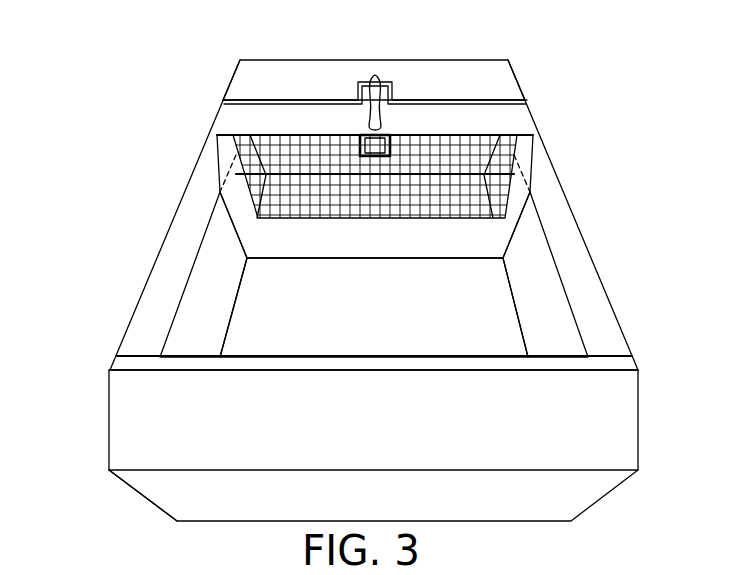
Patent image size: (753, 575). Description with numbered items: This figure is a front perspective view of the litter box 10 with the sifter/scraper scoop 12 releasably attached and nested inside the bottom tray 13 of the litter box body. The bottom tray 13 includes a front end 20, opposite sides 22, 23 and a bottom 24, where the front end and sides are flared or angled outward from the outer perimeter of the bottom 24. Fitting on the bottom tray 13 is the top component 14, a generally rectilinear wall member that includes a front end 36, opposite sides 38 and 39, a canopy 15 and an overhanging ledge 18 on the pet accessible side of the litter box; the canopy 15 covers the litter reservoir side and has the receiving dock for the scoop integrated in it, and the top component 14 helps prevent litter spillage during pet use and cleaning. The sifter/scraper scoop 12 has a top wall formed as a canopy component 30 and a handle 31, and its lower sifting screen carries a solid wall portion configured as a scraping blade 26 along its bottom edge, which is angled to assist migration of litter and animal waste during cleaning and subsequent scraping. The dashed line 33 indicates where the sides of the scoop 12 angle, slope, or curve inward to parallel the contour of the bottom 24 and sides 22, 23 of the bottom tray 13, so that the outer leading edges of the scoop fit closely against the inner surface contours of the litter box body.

The litter box 10 is at (116, 82).
The sifter/scraper scoop 12 is at (246, 125).
The bottom tray 13 is at (157, 503).
The top component 14 is at (107, 447).
The canopy 15 is at (487, 62).
The overhanging ledge 18 is at (124, 362).
The front end 20 is at (360, 507).
The side 22 is at (200, 317).
The side 23 is at (533, 317).
The bottom 24 is at (361, 317).
The scraping blade 26 is at (361, 247).
The canopy component 30 is at (518, 122).
The handle 31 is at (378, 76).
The dashed line 33 is at (522, 173).
The front end 36 is at (360, 429).
The side 38 is at (174, 243).
The side 39 is at (577, 247).